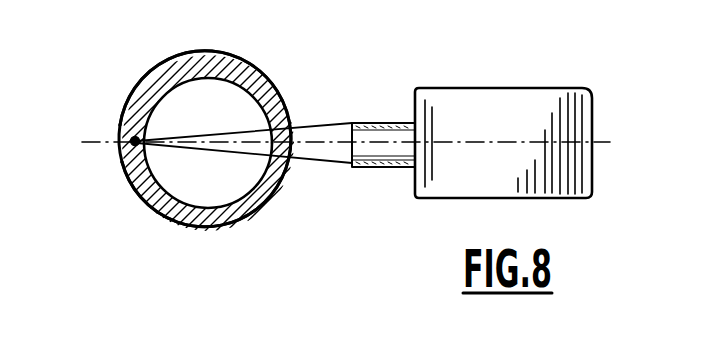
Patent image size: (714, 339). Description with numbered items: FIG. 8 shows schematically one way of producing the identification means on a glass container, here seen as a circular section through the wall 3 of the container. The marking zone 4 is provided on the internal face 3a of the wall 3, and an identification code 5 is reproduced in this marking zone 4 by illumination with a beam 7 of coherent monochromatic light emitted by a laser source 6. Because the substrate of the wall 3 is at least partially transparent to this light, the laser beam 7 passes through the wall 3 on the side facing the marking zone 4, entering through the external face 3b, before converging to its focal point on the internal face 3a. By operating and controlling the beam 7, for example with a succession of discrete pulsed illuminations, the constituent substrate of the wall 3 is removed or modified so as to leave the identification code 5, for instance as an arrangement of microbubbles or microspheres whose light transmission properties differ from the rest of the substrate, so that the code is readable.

The wall 3 is at (252, 67).
The internal face 3a is at (162, 97).
The external face 3b is at (253, 210).
The marking zone 4 is at (120, 127).
The identification code 5 is at (122, 163).
The laser source 6 is at (475, 108).
The beam 7 is at (320, 142).